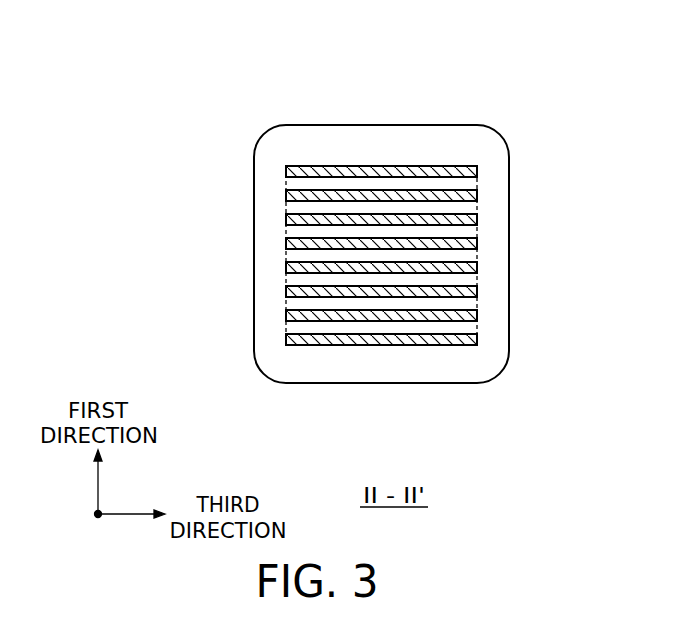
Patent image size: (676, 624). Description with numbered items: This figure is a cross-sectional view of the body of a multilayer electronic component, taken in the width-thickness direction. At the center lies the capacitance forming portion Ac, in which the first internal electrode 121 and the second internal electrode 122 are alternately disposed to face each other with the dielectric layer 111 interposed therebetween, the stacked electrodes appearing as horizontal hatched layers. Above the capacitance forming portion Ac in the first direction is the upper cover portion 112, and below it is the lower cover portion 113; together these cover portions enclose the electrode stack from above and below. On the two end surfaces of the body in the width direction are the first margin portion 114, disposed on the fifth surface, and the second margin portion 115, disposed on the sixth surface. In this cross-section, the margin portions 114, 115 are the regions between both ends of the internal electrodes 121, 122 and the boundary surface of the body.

The dielectric layer 111 is at (432, 240).
The upper cover portion 112 is at (381, 133).
The lower cover portion 113 is at (377, 372).
The first margin portion 114 is at (263, 283).
The second margin portion 115 is at (500, 284).
The first internal electrode 121 is at (478, 166).
The second internal electrode 122 is at (478, 193).
The capacitance forming portion Ac is at (285, 258).